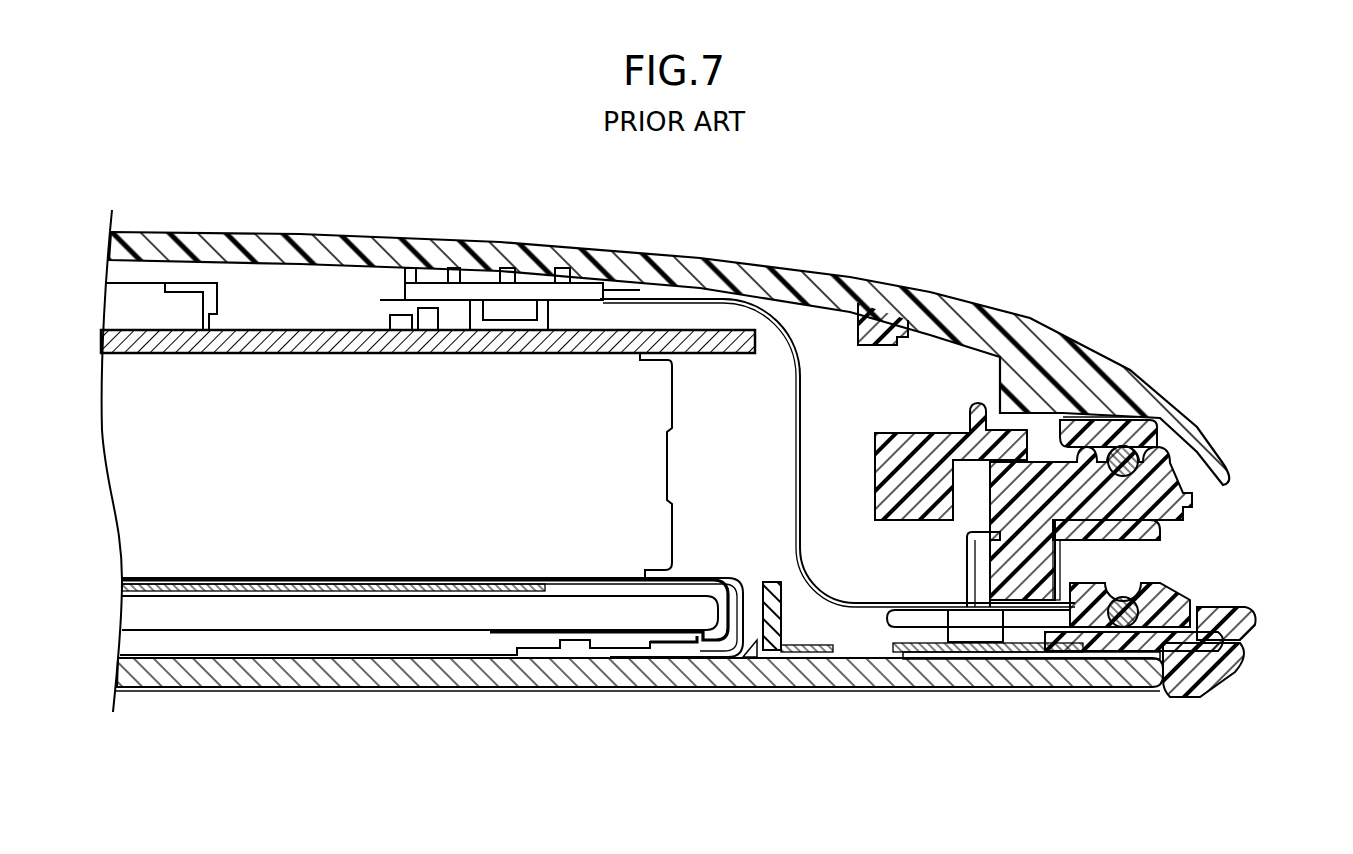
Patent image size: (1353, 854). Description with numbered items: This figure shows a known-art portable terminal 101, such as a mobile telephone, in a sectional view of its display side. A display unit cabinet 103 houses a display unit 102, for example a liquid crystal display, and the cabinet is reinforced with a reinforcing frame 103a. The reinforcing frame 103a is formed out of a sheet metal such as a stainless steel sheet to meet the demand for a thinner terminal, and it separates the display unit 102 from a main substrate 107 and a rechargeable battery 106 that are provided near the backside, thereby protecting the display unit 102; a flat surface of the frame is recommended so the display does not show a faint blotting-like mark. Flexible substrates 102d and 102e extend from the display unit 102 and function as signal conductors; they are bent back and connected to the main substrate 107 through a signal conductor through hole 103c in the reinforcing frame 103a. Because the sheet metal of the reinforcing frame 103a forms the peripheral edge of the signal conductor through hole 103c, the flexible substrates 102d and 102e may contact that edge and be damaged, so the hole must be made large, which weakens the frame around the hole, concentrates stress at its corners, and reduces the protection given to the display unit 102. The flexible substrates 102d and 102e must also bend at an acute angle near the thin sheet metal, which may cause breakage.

The portable terminal 101 is at (963, 742).
The display unit 102 is at (585, 691).
The flexible substrate 102d is at (747, 643).
The flexible substrate 102e is at (682, 645).
The display unit cabinet 103 is at (1213, 675).
The reinforcing frame 103a is at (423, 592).
The signal conductor through hole 103c is at (550, 575).
The rechargeable battery 106 is at (657, 465).
The main substrate 107 is at (298, 330).